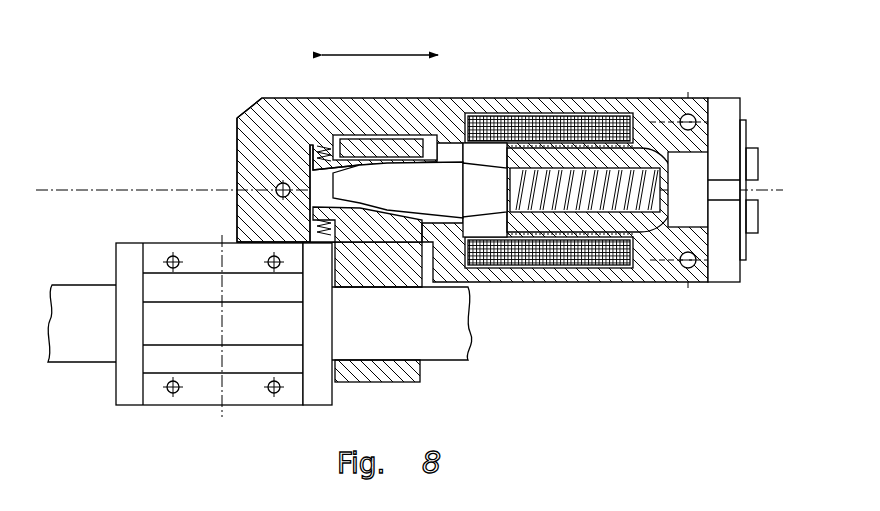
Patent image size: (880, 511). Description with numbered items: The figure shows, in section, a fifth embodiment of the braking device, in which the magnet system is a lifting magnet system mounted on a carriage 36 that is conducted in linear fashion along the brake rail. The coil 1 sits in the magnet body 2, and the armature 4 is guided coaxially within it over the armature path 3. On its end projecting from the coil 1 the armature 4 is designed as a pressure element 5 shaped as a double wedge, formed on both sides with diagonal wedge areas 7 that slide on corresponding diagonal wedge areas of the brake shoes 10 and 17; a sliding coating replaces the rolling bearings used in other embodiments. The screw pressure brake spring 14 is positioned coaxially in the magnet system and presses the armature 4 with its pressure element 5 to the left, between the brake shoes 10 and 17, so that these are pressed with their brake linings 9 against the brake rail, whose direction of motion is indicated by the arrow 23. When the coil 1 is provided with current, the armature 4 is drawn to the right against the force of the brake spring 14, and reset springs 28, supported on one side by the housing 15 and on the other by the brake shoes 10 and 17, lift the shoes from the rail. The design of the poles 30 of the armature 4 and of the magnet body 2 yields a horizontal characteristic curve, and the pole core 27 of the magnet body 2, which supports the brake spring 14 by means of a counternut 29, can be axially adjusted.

The coil 1 is at (550, 122).
The magnet body 2 is at (662, 277).
The armature path 3 is at (520, 222).
The armature 4 is at (447, 208).
The pressure element 5 is at (365, 208).
The diagonal wedge areas 7 is at (340, 113).
The brake linings 9 is at (368, 290).
The brake shoe 10 is at (424, 267).
The brake spring 14 is at (600, 277).
The housing 15 is at (258, 155).
The brake shoe 17 is at (398, 148).
The arrow 23 is at (383, 52).
The pole core 27 is at (686, 279).
The reset springs 28 is at (263, 100).
The counternut 29 is at (725, 140).
The poles 30 is at (490, 155).
The carriage 36 is at (150, 250).